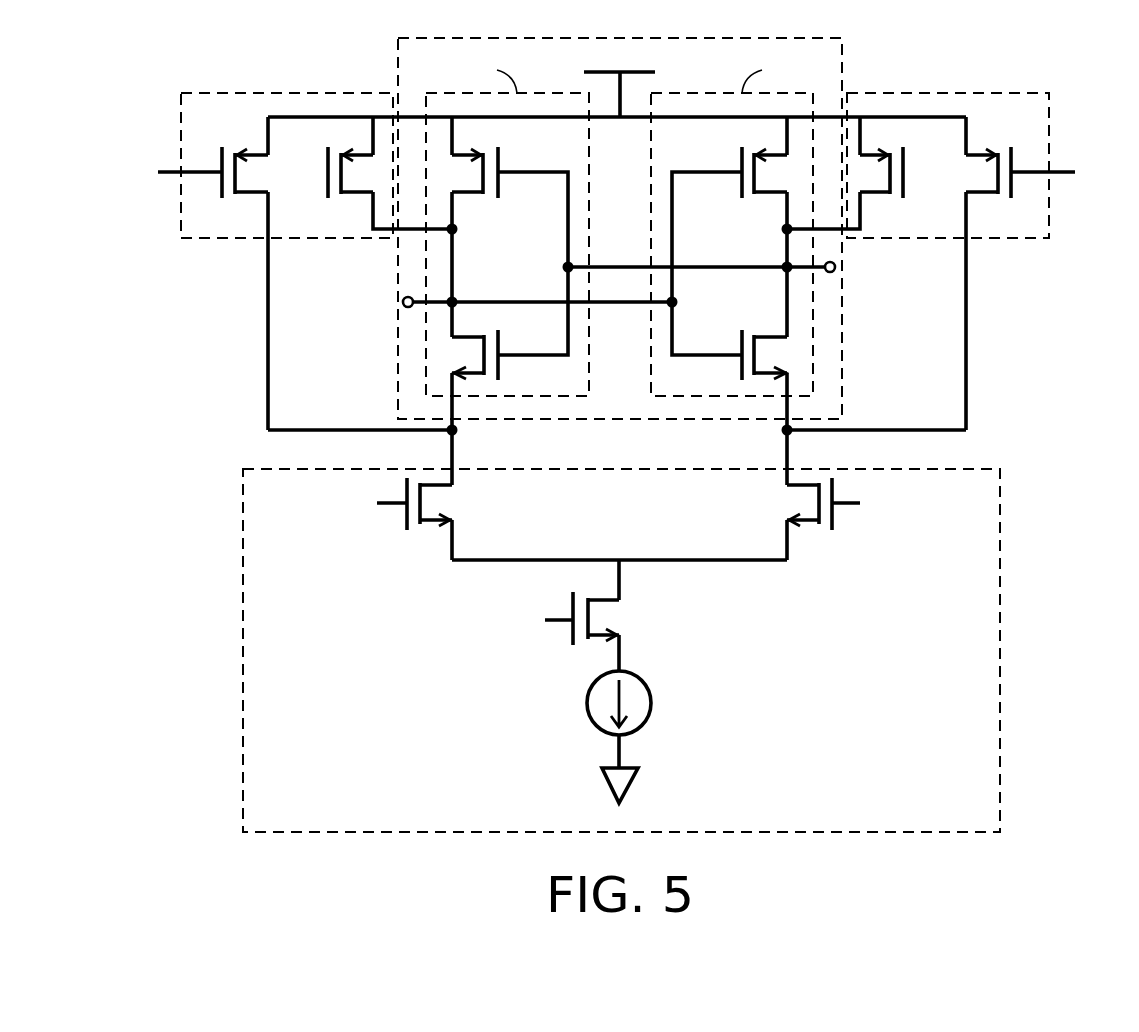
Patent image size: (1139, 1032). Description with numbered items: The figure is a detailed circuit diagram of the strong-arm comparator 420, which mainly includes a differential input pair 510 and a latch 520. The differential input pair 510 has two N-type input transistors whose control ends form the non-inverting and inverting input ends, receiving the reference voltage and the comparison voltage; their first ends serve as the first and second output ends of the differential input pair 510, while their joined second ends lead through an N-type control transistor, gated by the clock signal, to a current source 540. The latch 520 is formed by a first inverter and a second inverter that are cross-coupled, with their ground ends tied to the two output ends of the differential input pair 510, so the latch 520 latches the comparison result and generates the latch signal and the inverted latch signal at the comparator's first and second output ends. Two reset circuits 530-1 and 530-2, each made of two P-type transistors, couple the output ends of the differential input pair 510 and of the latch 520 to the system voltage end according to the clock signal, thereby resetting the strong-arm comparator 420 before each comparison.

The strong-arm comparator 420 is at (1114, 850).
The differential input pair 510 is at (1000, 605).
The latch 520 is at (843, 60).
The reset circuit 530-1 is at (280, 92).
The reset circuit 530-2 is at (1005, 92).
The current source 540 is at (652, 695).